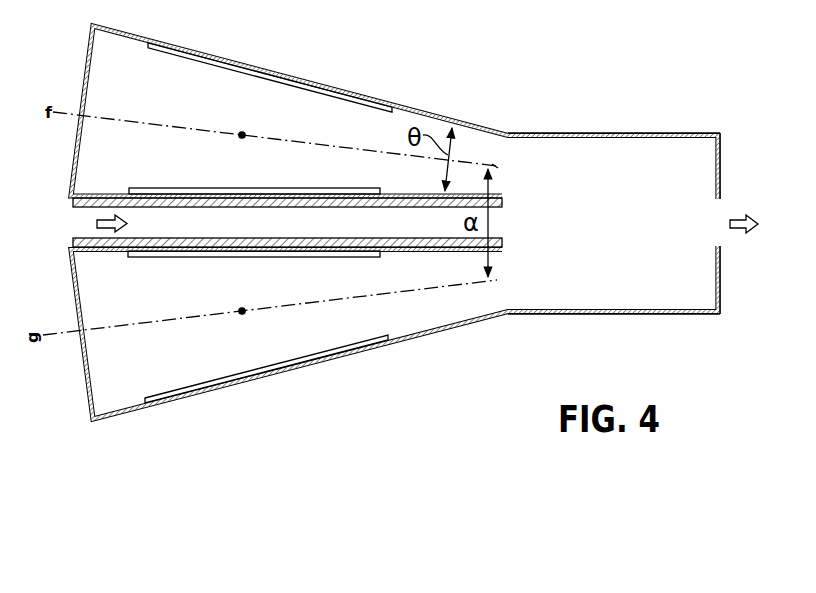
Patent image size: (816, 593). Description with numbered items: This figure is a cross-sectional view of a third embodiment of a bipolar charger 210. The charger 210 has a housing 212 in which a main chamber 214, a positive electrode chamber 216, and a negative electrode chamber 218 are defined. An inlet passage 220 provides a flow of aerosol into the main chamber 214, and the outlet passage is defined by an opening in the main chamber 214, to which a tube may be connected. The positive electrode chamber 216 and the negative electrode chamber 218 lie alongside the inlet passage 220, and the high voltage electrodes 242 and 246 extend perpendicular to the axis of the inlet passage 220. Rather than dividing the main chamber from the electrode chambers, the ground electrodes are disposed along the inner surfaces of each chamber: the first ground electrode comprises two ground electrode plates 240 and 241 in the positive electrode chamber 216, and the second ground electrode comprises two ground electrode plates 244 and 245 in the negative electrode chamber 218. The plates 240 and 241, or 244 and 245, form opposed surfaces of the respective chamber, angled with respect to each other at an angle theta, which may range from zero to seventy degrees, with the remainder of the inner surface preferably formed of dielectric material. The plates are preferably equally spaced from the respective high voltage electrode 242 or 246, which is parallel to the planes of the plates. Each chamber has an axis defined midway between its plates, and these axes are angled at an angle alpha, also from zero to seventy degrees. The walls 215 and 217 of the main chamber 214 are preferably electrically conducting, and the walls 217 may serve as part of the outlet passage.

The bipolar charger 210 is at (543, 86).
The housing 212 is at (380, 99).
The main chamber 214 is at (630, 233).
The walls of the main chamber 215 is at (607, 133).
The positive electrode chamber 216 is at (190, 103).
The walls of the main chamber 217 is at (720, 182).
The negative electrode chamber 218 is at (188, 372).
The inlet passage 220 is at (87, 208).
The ground electrode plate 240 is at (263, 71).
The ground electrode plate 241 is at (253, 187).
The high voltage electrode 242 is at (241, 131).
The ground electrode plate 244 is at (232, 257).
The ground electrode plate 245 is at (267, 365).
The high voltage electrode 246 is at (244, 314).